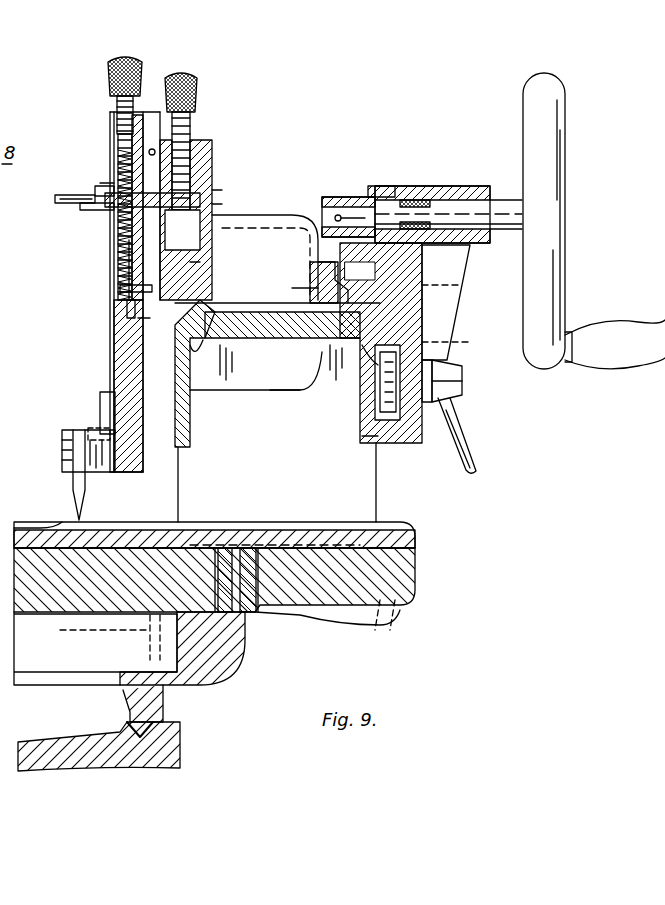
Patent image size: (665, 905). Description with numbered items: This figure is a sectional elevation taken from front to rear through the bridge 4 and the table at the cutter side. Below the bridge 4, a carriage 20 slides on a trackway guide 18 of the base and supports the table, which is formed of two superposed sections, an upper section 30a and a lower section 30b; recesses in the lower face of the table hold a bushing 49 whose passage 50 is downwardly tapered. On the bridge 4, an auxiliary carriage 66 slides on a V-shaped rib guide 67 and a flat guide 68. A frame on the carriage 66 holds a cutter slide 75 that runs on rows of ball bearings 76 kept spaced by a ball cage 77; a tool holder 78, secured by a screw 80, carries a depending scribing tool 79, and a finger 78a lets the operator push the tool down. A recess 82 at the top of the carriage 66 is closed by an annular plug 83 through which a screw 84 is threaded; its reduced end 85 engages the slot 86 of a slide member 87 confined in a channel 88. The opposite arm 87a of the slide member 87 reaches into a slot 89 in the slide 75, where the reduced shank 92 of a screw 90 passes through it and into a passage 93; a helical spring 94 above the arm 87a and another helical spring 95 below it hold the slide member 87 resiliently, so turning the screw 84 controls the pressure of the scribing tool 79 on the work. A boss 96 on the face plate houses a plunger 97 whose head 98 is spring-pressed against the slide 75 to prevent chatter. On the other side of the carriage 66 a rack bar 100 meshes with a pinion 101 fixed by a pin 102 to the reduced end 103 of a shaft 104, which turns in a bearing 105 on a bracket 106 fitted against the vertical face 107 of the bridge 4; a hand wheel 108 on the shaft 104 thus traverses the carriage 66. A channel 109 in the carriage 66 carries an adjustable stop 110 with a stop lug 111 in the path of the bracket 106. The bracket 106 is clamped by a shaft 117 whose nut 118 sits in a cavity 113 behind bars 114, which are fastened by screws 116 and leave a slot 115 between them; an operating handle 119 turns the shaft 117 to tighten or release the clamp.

The bridge 4 is at (288, 390).
The trackway guide 18 is at (175, 740).
The carriage 20 is at (213, 672).
The upper table section 30a is at (412, 540).
The lower table section 30b is at (412, 575).
The bushing 49 is at (300, 623).
The passage 50 is at (256, 612).
The auxiliary carriage 66 is at (268, 300).
The guide 67 is at (205, 346).
The guide 68 is at (325, 348).
The cutter slide 75 is at (137, 461).
The ball bearings 76 is at (14, 261).
The ball cage 77 is at (14, 283).
The tool holder 78 is at (62, 446).
The finger 78a is at (86, 428).
The scribing tool 79 is at (78, 487).
The screw 80 is at (100, 389).
The recess 82 is at (190, 262).
The annular plug 83 is at (212, 143).
The screw 84 is at (207, 71).
The reduced non-threaded end 85 is at (213, 205).
The slot 86 is at (213, 191).
The slide member 87 is at (113, 233).
The arm 87a is at (110, 182).
The channel 88 is at (120, 288).
The slot 89 is at (118, 252).
The screw 90 is at (116, 98).
The reduced shank 92 is at (127, 304).
The passage 93 is at (138, 318).
The helical spring 94 is at (118, 140).
The helical spring 95 is at (122, 270).
The boss 96 is at (84, 209).
The plunger 97 is at (56, 199).
The enlarged head 98 is at (97, 191).
The rack bar 100 is at (318, 262).
The pinion 101 is at (376, 186).
The pin 102 is at (334, 197).
The reduced end 103 is at (395, 200).
The shaft 104 is at (430, 210).
The bearing 105 is at (482, 186).
The bracket 106 is at (422, 286).
The vertical face 107 is at (420, 318).
The hand wheel 108 is at (560, 155).
The channel 109 is at (292, 288).
The adjustable stop 110 is at (312, 299).
The stop lug 111 is at (428, 299).
The recess or cavity 113 is at (362, 437).
The bars 114 is at (432, 360).
The slot 115 is at (445, 385).
The screws 116 is at (425, 341).
The shaft 117 is at (380, 392).
The nut 118 is at (362, 345).
The operating handle 119 is at (476, 470).